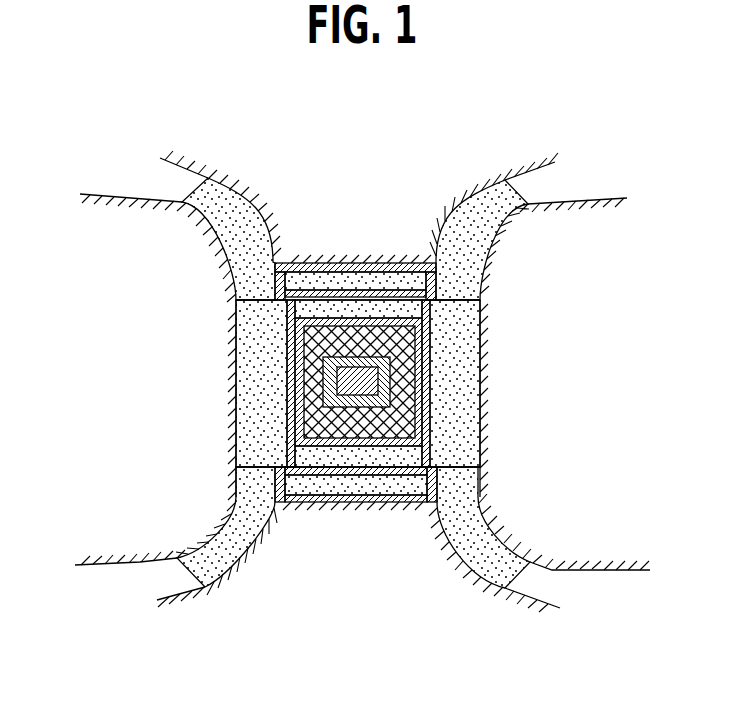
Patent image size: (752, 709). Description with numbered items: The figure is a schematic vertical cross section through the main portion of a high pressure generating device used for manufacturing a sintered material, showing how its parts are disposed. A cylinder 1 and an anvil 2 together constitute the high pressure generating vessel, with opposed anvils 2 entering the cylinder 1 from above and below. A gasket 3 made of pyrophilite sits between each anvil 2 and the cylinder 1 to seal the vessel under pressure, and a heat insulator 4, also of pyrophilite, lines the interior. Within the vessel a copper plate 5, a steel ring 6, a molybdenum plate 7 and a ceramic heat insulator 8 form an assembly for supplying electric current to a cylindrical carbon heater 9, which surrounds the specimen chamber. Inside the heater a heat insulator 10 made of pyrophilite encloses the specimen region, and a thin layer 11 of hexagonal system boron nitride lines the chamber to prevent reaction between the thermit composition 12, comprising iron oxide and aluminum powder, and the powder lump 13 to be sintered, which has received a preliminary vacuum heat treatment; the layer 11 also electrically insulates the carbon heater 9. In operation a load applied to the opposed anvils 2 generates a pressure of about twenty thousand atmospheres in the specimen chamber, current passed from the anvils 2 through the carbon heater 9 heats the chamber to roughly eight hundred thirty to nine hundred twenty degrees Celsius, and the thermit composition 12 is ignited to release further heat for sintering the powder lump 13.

The cylinder 1 is at (572, 402).
The anvil 2 is at (367, 218).
The gasket 3 is at (497, 228).
The heat insulator 4 is at (457, 437).
The copper plate 5 is at (303, 505).
The steel ring 6 is at (437, 485).
The molybdenum plate 7 is at (338, 475).
The ceramic heat insulator 8 is at (377, 488).
The cylindrical carbon heater 9 is at (430, 317).
The heat insulator 10 is at (303, 455).
The thin layer of hexagonal system boron nitride 11 is at (330, 390).
The thermit composition 12 is at (291, 333).
The powder lump 13 is at (398, 386).